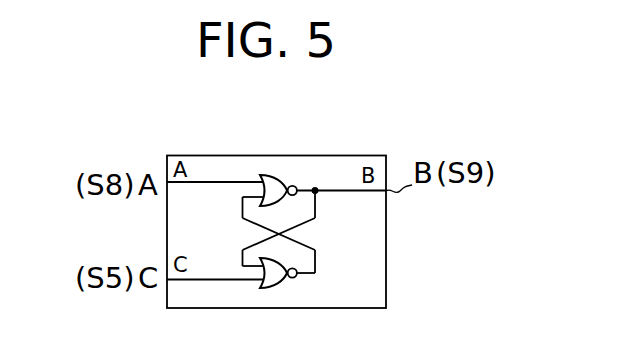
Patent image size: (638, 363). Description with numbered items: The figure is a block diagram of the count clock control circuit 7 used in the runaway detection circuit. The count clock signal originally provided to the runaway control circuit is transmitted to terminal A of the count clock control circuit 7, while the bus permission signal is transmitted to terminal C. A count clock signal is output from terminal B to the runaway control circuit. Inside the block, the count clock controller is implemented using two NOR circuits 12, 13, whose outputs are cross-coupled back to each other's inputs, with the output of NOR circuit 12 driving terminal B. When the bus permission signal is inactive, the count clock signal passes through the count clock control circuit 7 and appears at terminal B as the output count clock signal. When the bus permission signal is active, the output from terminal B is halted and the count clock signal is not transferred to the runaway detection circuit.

The count clock control circuit 7 is at (386, 305).
The NOR circuit 12 is at (262, 176).
The NOR circuit 13 is at (284, 281).